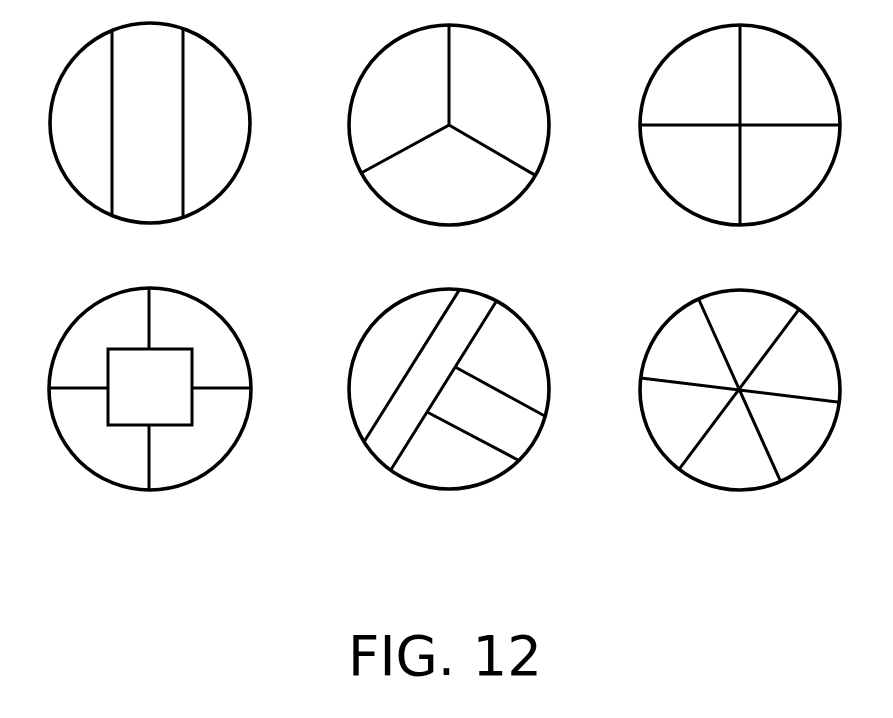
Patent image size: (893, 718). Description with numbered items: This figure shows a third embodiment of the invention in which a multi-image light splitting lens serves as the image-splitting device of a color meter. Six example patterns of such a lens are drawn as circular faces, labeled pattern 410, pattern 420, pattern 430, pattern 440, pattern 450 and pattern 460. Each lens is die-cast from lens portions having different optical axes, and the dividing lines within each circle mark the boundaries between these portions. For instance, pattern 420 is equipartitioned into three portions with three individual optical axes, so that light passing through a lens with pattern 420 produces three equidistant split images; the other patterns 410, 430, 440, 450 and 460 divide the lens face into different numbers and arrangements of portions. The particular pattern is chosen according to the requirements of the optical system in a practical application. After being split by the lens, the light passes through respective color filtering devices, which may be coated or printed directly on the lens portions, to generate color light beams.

The multi-image light splitting lens pattern 410 is at (150, 148).
The multi-image light splitting lens pattern 420 is at (449, 149).
The multi-image light splitting lens pattern 430 is at (740, 149).
The multi-image light splitting lens pattern 440 is at (150, 416).
The multi-image light splitting lens pattern 450 is at (449, 416).
The multi-image light splitting lens pattern 460 is at (740, 417).